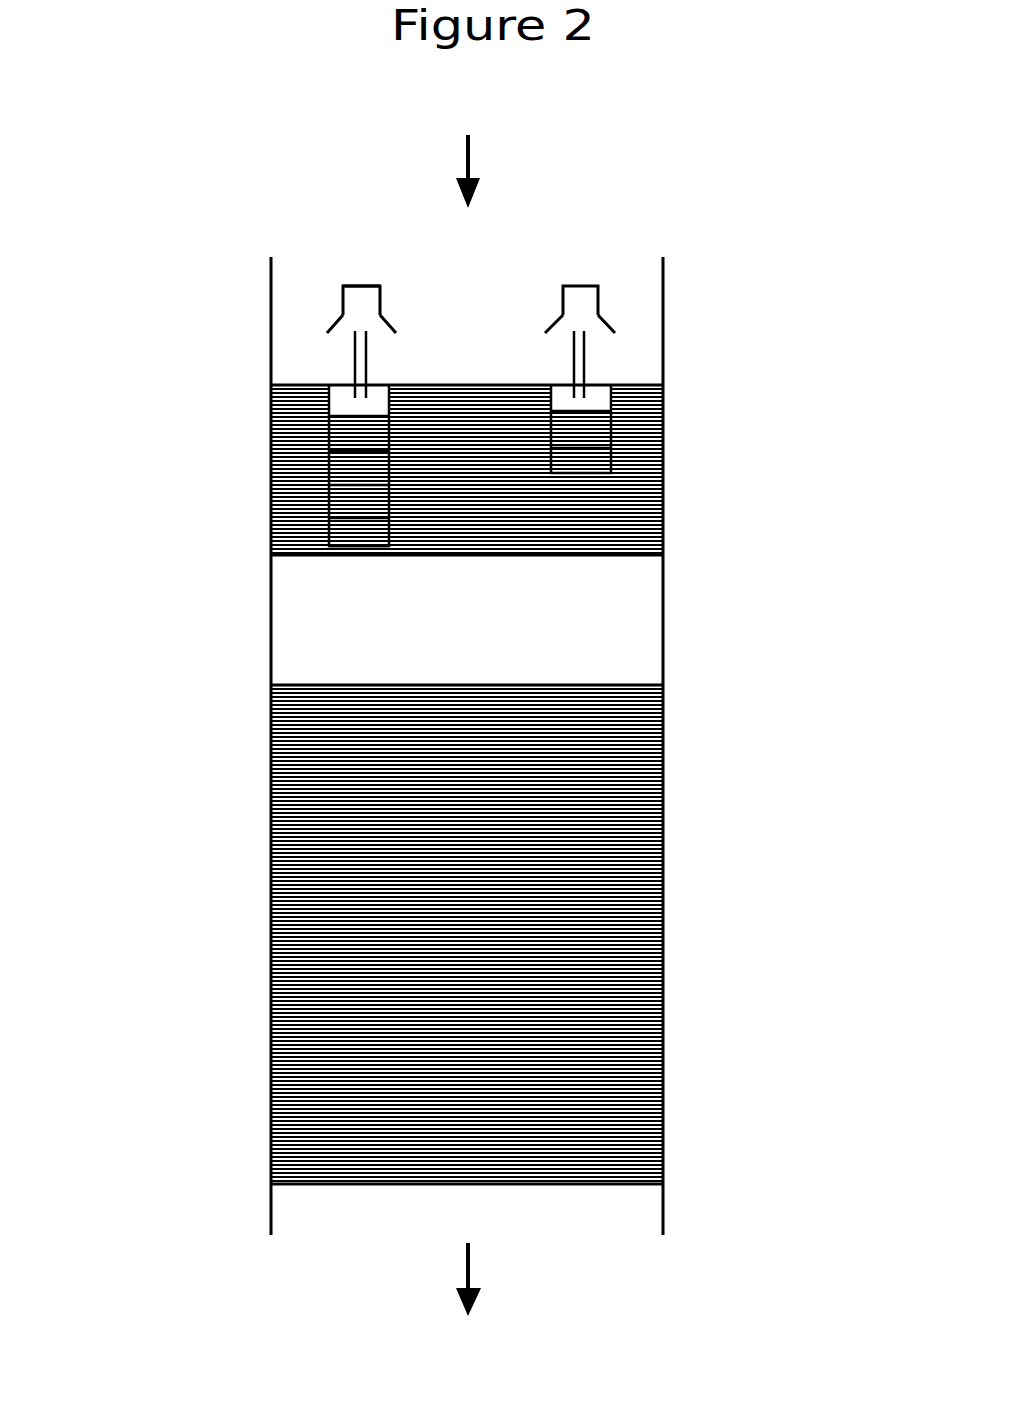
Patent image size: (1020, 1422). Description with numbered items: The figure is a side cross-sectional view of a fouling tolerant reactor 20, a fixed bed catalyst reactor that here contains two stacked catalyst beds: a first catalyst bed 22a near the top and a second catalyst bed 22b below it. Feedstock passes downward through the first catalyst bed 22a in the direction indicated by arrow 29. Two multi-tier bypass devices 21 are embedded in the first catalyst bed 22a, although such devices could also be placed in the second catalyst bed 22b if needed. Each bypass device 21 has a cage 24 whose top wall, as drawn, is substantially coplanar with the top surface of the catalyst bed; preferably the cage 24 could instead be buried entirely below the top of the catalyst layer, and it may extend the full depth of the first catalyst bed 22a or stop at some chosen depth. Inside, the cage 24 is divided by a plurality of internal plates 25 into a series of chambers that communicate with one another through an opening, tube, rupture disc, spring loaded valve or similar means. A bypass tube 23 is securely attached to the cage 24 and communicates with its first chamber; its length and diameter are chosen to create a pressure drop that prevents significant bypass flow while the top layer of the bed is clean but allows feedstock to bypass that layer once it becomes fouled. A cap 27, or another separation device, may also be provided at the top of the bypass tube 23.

The fouling tolerant reactor 20 is at (250, 675).
The multi-tier bypass device 21 is at (307, 257).
The first catalyst bed 22a is at (632, 463).
The second catalyst bed 22b is at (632, 808).
The bypass tube 23 is at (347, 345).
The cage 24 is at (318, 437).
The internal plate 25 is at (355, 513).
The cap 27 is at (350, 278).
The arrow 29 is at (484, 145).